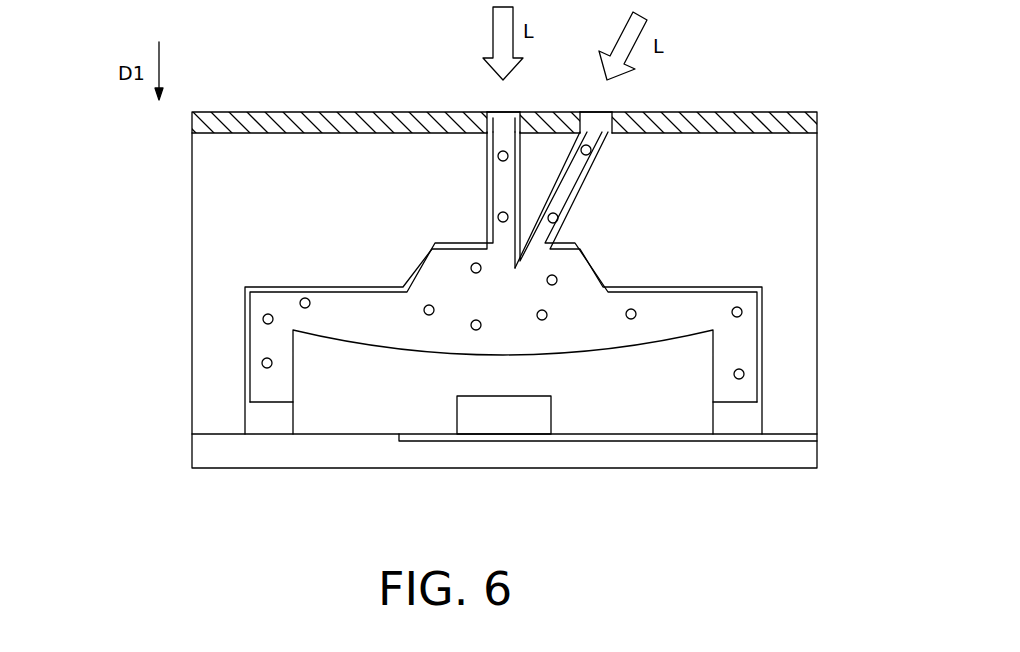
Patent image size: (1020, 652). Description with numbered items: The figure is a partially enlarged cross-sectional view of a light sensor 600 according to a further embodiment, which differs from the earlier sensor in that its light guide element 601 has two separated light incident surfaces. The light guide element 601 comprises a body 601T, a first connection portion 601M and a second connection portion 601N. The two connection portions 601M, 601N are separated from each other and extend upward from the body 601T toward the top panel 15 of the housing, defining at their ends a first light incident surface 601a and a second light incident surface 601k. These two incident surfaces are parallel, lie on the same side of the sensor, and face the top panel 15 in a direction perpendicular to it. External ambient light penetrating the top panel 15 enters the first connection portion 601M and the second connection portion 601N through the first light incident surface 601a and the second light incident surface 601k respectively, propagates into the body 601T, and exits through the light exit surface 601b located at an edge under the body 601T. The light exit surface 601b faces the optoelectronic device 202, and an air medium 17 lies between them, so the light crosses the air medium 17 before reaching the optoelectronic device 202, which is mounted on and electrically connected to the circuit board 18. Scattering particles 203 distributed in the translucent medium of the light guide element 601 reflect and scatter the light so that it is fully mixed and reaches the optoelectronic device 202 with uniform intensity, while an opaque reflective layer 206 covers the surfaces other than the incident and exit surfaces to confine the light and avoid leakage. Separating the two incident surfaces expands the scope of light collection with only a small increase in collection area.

The light sensor 600 is at (90, 33).
The light guide element 601 is at (80, 290).
The first light incident surface 601a is at (497, 121).
The light exit surface 601b is at (416, 362).
The second light incident surface 601k is at (593, 122).
The body 601T is at (360, 320).
The first connection portion 601M is at (500, 190).
The second connection portion 601N is at (573, 173).
The top panel 15 is at (509, 122).
The scattering particles 203 is at (470, 268).
The opaque reflective layer 206 is at (247, 300).
The optoelectronic device 202 is at (507, 410).
The air medium 17 is at (665, 366).
The circuit board 18 is at (737, 437).